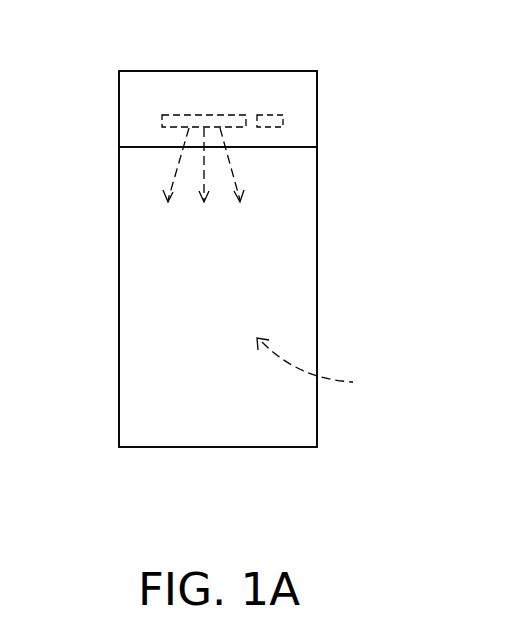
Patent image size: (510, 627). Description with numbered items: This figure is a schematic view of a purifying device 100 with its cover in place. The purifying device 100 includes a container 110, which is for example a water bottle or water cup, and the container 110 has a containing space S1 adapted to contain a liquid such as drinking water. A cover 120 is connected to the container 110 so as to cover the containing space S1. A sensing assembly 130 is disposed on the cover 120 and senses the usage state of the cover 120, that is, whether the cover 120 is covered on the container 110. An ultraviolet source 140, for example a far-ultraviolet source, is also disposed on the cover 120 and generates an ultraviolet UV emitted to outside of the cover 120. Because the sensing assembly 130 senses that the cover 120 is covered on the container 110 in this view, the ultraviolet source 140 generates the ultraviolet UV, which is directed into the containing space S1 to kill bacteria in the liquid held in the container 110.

The purifying device 100 is at (462, 497).
The container 110 is at (137, 310).
The cover 120 is at (137, 112).
The sensing assembly 130 is at (272, 112).
The ultraviolet source 140 is at (198, 115).
The ultraviolet UV is at (237, 176).
The containing space S1 is at (320, 369).